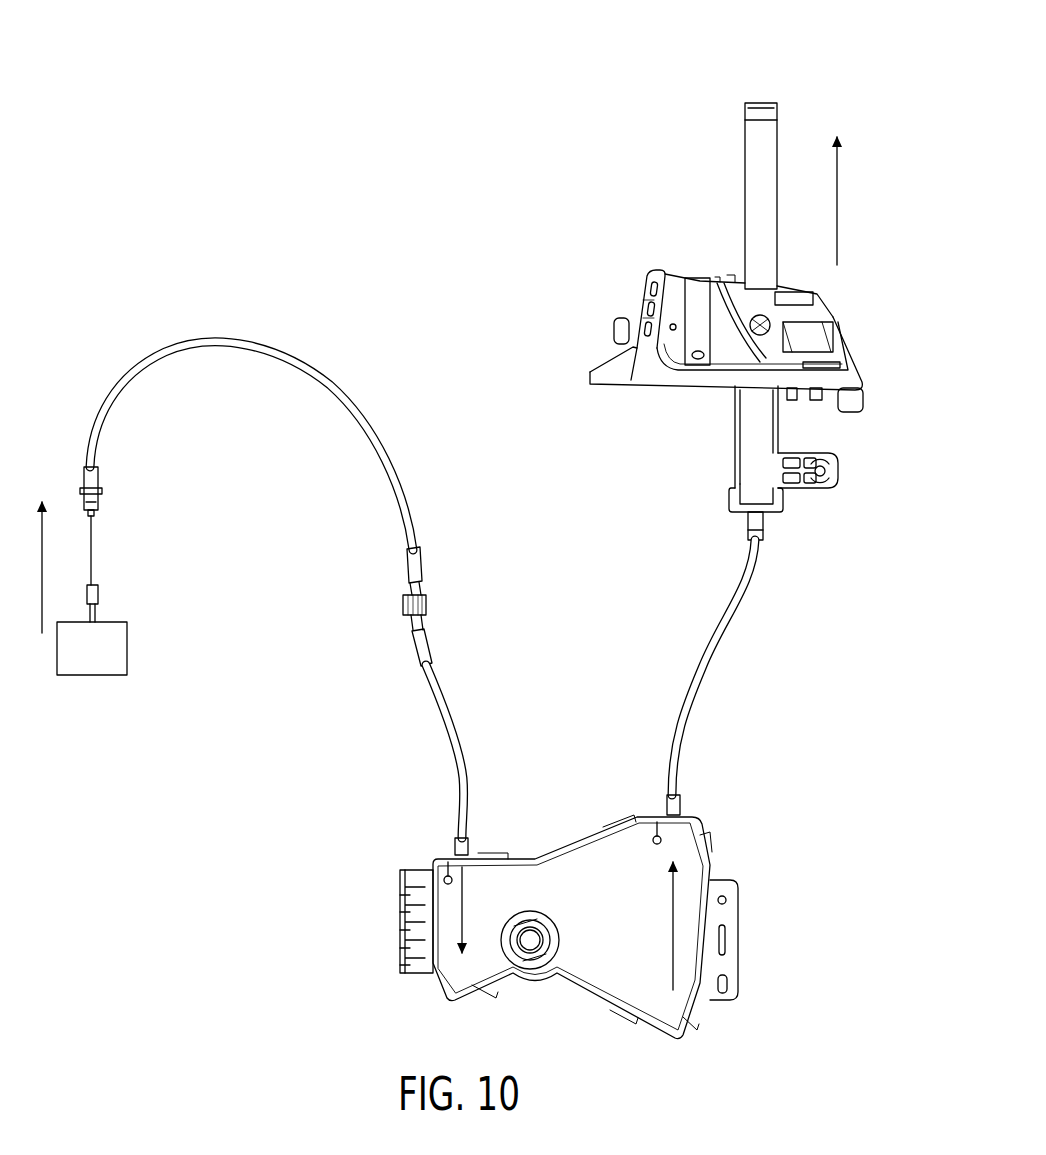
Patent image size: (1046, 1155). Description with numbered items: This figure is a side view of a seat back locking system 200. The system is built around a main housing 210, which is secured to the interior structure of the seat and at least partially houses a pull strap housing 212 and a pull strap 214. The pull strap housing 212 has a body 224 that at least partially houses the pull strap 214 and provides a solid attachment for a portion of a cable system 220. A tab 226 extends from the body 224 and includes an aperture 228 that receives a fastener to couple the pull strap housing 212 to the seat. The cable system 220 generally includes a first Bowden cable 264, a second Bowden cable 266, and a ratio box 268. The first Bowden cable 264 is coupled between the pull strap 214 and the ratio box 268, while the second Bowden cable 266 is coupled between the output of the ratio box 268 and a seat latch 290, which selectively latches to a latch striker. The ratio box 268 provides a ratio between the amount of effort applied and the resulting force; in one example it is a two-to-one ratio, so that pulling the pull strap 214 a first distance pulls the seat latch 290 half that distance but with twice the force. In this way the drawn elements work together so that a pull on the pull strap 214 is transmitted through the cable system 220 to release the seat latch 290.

The seat back locking system 200 is at (812, 54).
The main housing 210 is at (648, 283).
The pull strap housing 212 is at (735, 427).
The pull strap 214 is at (762, 160).
The cable system 220 is at (772, 802).
The body 224 is at (750, 475).
The tab 226 is at (810, 490).
The aperture 228 is at (824, 473).
The first Bowden cable 264 is at (712, 665).
The second Bowden cable 266 is at (300, 355).
The ratio box 268 is at (585, 860).
The seat latch 290 is at (127, 648).